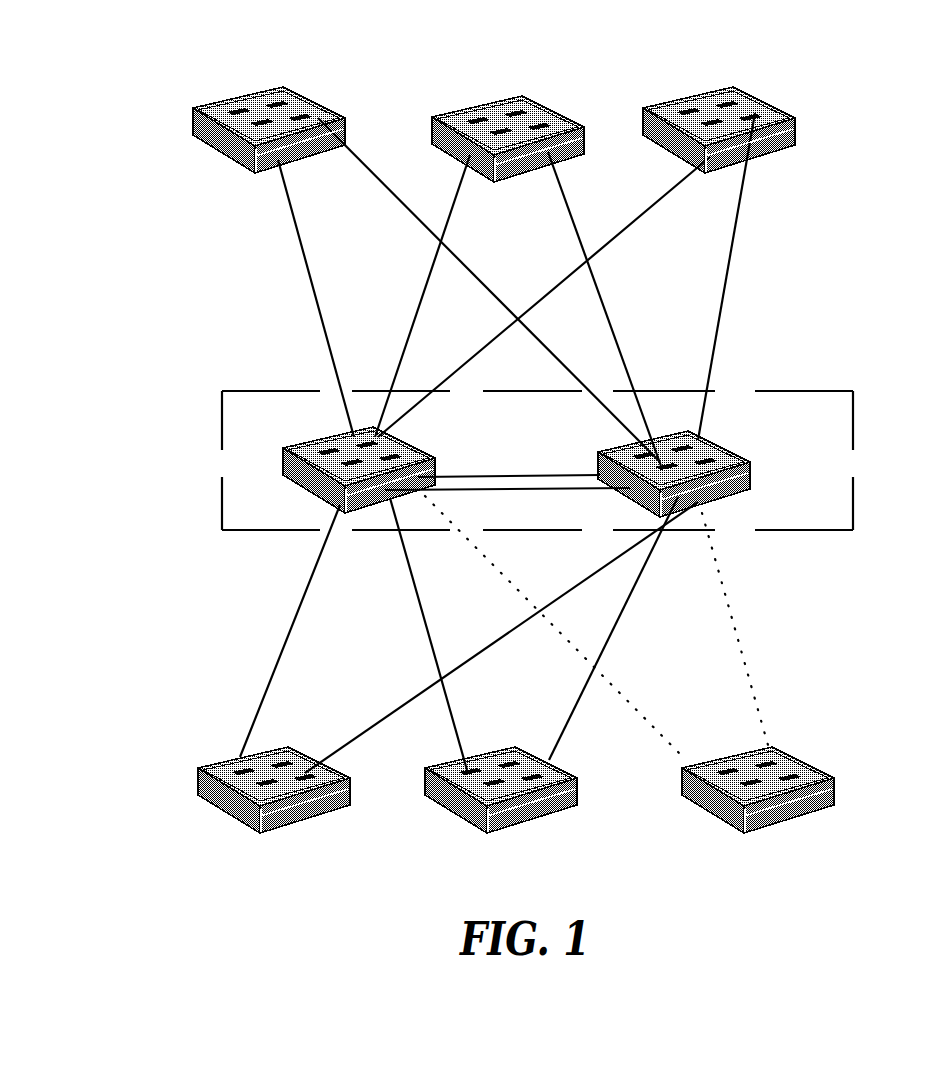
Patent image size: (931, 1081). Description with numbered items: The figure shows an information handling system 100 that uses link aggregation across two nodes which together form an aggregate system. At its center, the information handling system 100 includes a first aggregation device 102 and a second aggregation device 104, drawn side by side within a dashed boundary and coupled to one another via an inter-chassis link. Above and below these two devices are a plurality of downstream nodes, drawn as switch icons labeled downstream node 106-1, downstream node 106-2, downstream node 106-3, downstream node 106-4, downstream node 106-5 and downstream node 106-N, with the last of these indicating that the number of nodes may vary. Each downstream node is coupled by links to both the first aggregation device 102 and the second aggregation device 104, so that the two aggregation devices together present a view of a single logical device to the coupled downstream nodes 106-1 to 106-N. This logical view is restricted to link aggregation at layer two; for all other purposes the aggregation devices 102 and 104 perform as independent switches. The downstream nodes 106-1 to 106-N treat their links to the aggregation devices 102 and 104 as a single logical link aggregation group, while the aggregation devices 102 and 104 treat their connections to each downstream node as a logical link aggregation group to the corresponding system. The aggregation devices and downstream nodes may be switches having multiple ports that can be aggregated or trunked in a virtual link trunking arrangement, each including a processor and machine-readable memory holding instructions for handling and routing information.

The information handling system 100 is at (85, 36).
The first aggregation device 102 is at (336, 465).
The second aggregation device 104 is at (699, 467).
The downstream node 106-1 is at (269, 109).
The downstream node 106-2 is at (508, 113).
The downstream node 106-3 is at (719, 109).
The downstream node 106-4 is at (274, 809).
The downstream node 106-5 is at (501, 809).
The downstream node 106-N is at (758, 809).